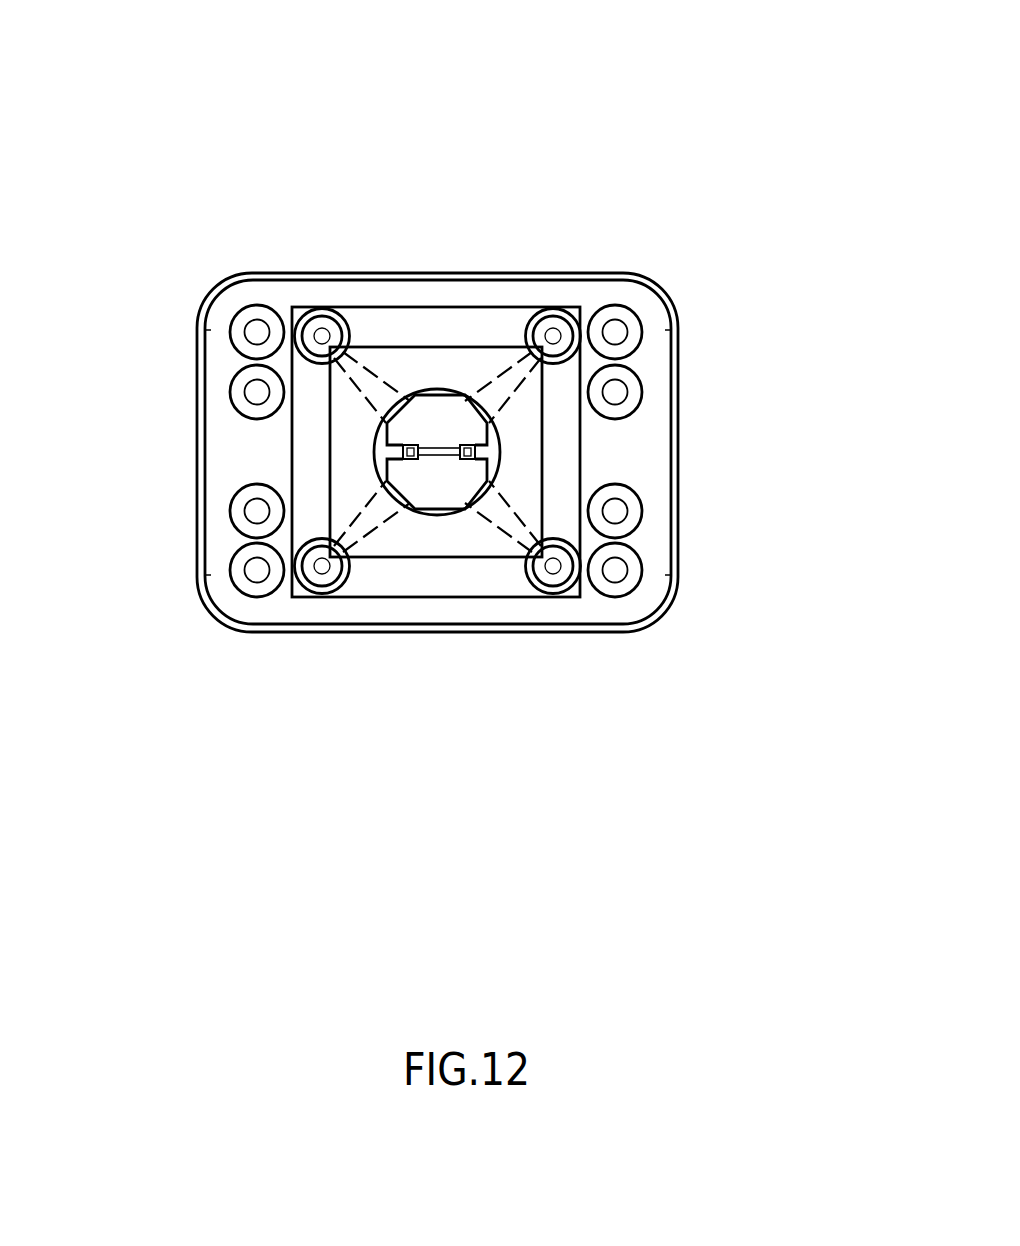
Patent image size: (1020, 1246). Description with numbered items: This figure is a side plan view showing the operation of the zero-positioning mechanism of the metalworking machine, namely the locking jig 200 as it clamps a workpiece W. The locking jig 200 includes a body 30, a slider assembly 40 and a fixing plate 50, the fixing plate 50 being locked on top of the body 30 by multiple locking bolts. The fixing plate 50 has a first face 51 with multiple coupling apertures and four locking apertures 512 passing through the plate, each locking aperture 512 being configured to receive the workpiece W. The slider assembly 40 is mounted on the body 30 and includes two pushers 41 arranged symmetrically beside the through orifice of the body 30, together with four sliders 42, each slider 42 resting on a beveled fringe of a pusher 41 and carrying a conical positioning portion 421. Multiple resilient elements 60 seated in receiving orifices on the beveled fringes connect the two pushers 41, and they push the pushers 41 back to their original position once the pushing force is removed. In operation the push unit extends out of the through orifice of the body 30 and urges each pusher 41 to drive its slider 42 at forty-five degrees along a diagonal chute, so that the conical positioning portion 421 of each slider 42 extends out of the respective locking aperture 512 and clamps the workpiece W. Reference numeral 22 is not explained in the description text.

The locking jig 200 is at (205, 455).
The fixing plate 50 is at (660, 613).
The first face 51 is at (650, 470).
The workpiece W is at (302, 387).
The body 30 is at (463, 547).
The locking aperture 512 is at (322, 320).
The conical positioning portion 421 is at (351, 340).
The slider assembly 40 is at (545, 186).
The pusher 41 is at (440, 407).
The slider 42 is at (378, 387).
The resilient element 60 is at (473, 452).
The clip 22 is at (410, 450).